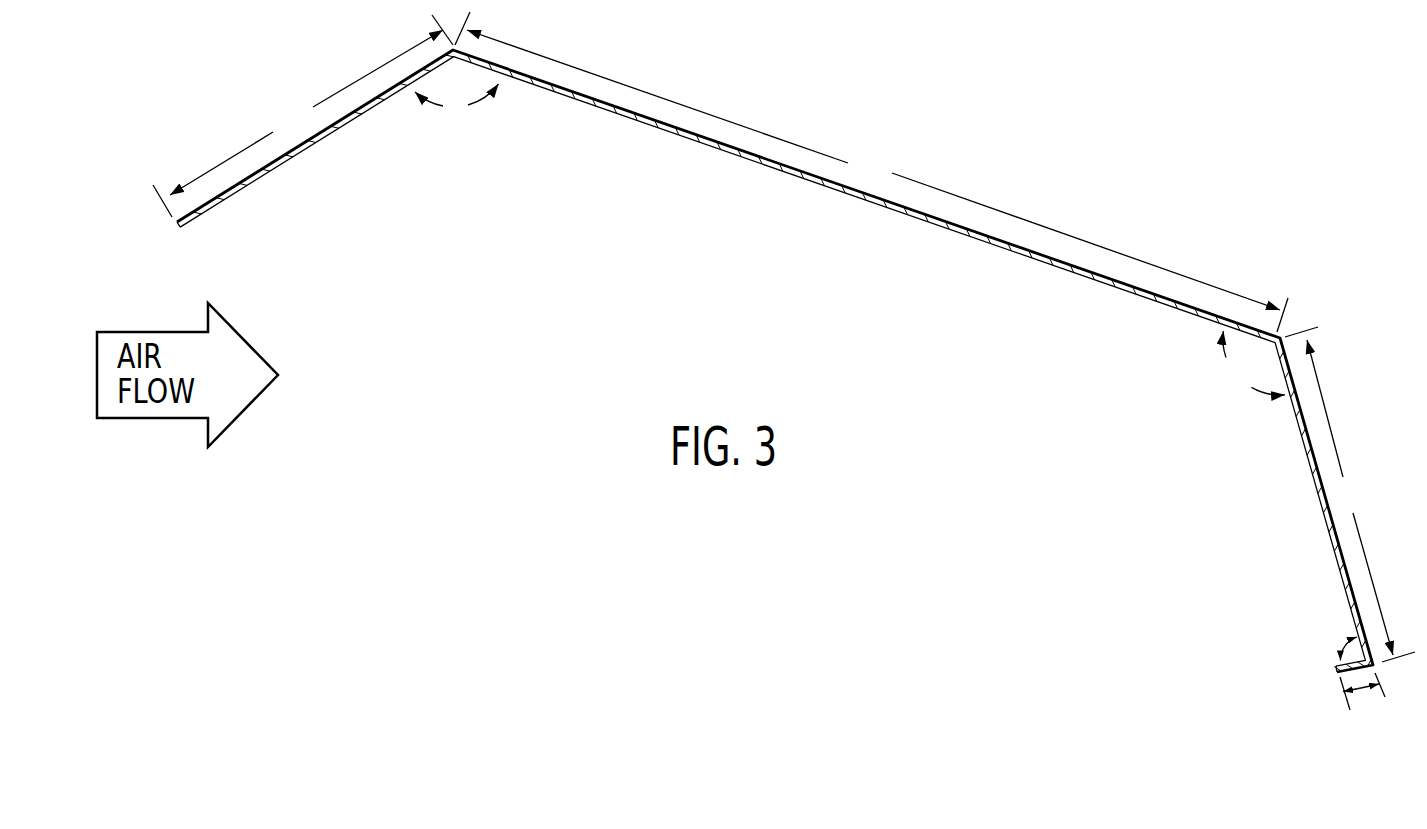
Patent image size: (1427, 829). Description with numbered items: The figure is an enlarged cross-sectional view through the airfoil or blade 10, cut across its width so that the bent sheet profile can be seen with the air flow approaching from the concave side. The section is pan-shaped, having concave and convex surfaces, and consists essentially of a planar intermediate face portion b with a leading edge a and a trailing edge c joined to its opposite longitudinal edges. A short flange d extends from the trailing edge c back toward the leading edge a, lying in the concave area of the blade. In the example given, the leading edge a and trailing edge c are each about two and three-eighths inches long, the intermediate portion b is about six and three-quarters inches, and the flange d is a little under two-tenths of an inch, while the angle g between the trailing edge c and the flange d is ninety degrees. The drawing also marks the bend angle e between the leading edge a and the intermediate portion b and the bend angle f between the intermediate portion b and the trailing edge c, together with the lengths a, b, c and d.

The airfoil or blade 10 is at (882, 209).
The leading edge a is at (303, 116).
The planar intermediate face portion b is at (871, 172).
The trailing edge c is at (1350, 494).
The flange d is at (1365, 693).
The bend angle between first and second segments e is at (457, 100).
The bend angle between second and third segments f is at (1254, 363).
The angle between the trailing edge and the flange g is at (1343, 645).